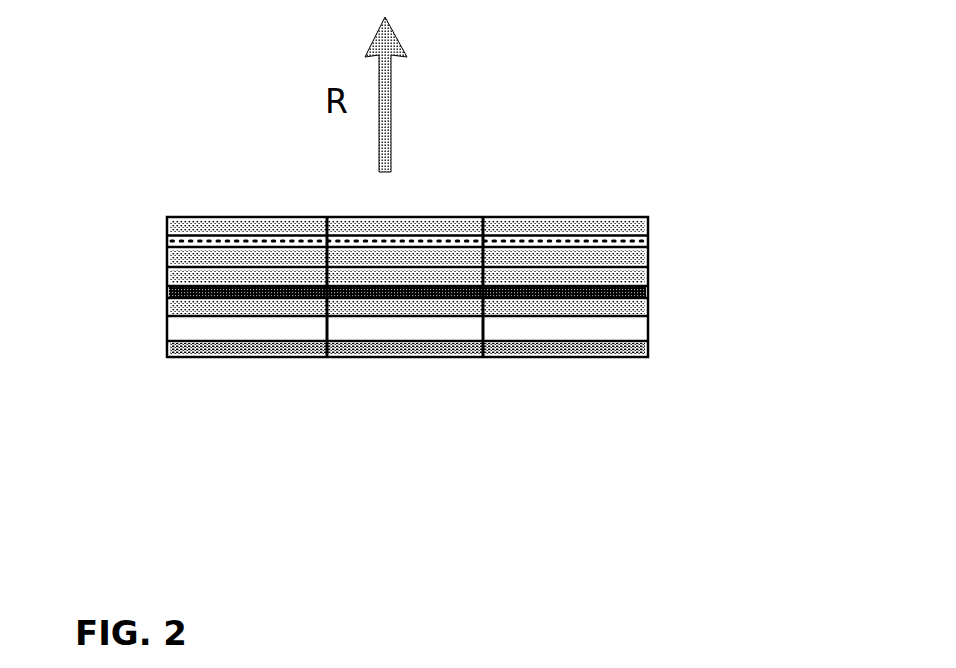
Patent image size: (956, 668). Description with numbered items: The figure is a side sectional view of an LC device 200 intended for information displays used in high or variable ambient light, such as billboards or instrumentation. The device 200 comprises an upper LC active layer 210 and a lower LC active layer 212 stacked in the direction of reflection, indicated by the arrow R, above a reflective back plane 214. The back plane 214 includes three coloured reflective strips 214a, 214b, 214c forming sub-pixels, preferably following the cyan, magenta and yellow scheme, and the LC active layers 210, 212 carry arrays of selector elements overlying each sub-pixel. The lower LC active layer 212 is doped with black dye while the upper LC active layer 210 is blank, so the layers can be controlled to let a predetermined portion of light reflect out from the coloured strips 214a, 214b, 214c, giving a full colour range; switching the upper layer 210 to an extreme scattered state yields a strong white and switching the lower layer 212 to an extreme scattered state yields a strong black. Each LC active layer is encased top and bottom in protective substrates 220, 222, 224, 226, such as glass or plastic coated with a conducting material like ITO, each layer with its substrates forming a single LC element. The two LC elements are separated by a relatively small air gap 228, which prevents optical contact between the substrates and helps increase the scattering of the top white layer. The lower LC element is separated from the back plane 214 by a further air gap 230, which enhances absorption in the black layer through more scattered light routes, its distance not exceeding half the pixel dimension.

The device 200 is at (774, 155).
The upper LC active layer 210 is at (160, 246).
The lower LC active layer 212 is at (160, 294).
The reflective back plane 214 is at (662, 350).
The coloured reflective strip 214a is at (250, 369).
The coloured reflective strip 214b is at (403, 369).
The coloured reflective strip 214c is at (565, 369).
The protective substrate 220 is at (662, 232).
The protective substrate 222 is at (662, 258).
The protective substrate 224 is at (662, 277).
The protective substrate 226 is at (710, 297).
The air gap 228 is at (160, 268).
The air gap 230 is at (195, 328).